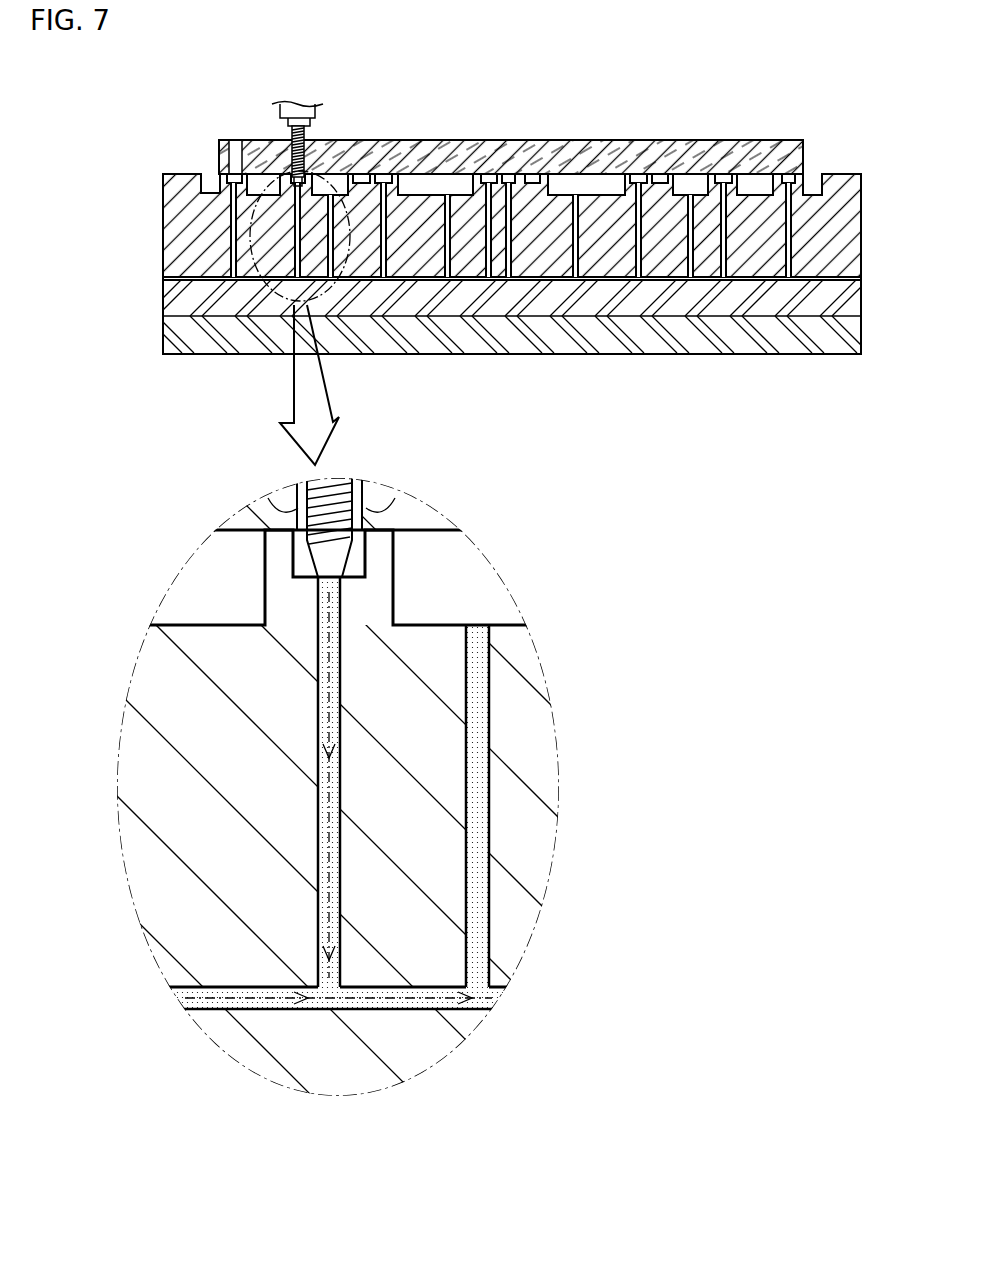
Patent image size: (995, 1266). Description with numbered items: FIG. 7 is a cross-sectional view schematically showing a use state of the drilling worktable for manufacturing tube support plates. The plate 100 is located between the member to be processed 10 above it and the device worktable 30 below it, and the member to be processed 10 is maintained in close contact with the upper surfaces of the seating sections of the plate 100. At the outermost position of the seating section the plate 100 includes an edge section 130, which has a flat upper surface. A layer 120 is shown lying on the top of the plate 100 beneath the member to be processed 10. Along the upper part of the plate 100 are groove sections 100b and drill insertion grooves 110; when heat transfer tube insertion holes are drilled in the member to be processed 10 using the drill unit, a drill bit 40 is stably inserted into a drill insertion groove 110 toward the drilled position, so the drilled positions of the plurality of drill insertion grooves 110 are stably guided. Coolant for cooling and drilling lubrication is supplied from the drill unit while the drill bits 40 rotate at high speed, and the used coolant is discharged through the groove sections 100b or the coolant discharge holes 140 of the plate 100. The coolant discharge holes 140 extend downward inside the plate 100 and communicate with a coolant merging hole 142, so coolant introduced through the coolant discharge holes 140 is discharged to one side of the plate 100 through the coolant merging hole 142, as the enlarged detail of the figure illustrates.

The member to be processed 10 is at (799, 153).
The device worktable 30 is at (834, 340).
The drill bit 40 is at (304, 138).
The plate 100 is at (163, 190).
The groove section 100b is at (603, 190).
The drill insertion groove 110 is at (230, 192).
The support plate 120 is at (553, 172).
The edge section 130 is at (182, 173).
The coolant discharge hole 140 is at (233, 238).
The coolant merging hole 142 is at (173, 990).